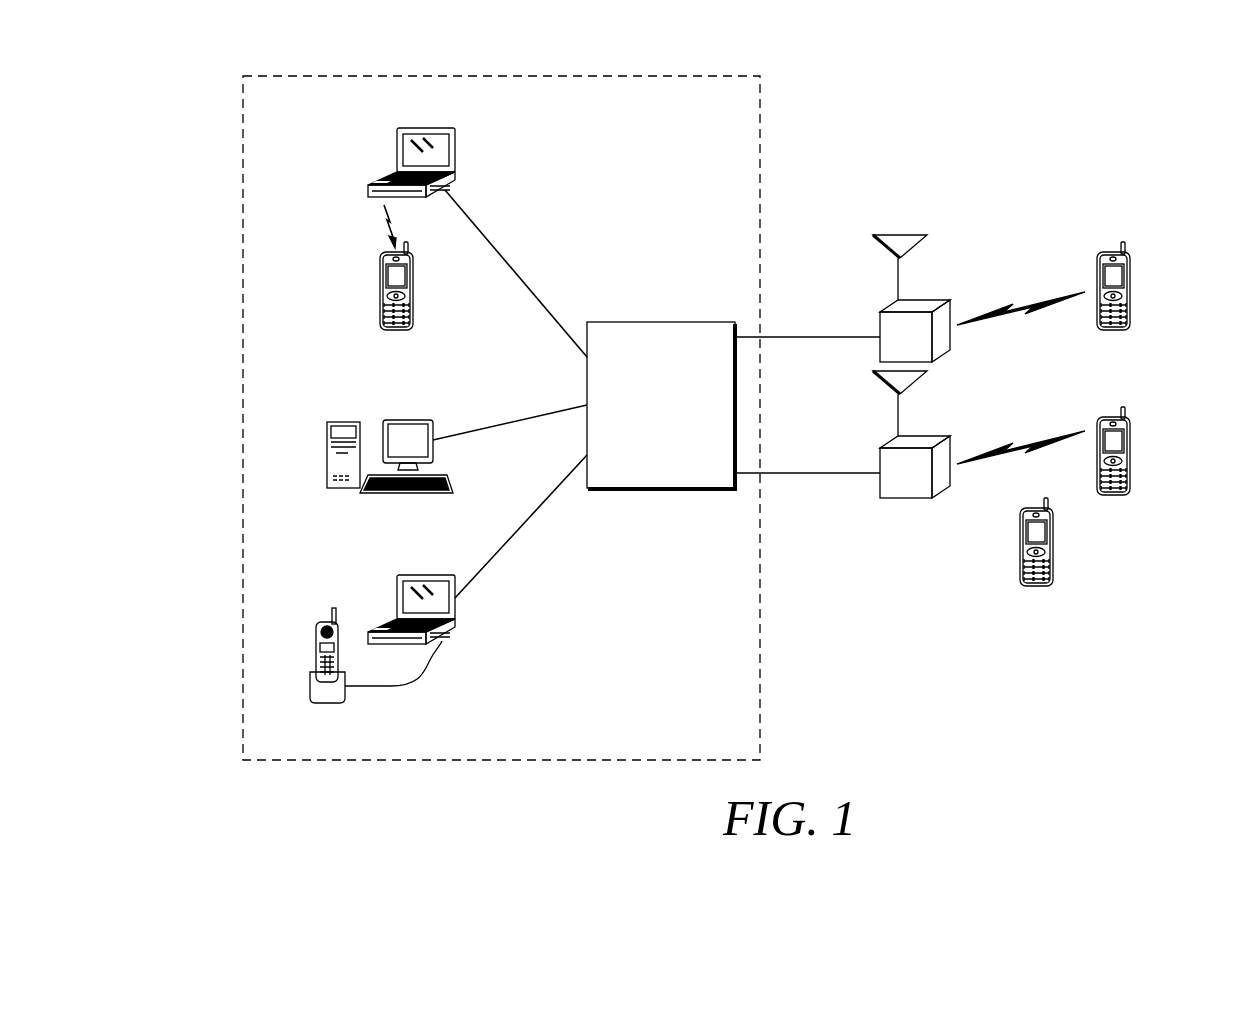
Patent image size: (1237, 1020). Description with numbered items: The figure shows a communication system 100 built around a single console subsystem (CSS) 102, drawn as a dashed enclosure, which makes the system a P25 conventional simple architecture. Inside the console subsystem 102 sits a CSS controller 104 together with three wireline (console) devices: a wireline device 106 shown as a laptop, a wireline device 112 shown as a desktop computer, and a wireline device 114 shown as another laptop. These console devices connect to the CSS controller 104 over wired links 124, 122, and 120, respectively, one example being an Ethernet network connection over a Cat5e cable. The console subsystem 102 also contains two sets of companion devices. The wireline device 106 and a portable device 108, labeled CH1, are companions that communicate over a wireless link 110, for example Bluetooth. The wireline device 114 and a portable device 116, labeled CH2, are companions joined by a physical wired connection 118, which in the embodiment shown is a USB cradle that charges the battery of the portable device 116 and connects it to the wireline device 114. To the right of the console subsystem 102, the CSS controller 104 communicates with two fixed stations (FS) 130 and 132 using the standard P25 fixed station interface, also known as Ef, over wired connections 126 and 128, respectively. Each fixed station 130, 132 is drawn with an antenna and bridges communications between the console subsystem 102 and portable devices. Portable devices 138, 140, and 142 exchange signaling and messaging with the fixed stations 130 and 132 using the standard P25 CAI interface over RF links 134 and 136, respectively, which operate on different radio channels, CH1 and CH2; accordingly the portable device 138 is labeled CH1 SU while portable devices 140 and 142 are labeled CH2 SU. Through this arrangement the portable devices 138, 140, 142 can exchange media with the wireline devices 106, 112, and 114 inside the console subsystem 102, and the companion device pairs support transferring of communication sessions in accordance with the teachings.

The communication system 100 is at (1120, 150).
The console subsystem 102 is at (746, 76).
The CSS controller 104 is at (700, 322).
The wireline device 106 is at (441, 130).
The portable device 108 is at (380, 294).
The wireless link 110 is at (388, 232).
The wireline device 112 is at (387, 420).
The wireline device 114 is at (408, 575).
The portable device 116 is at (330, 618).
The wired connection 118 is at (330, 703).
The wired link 120 is at (521, 528).
The wired link 122 is at (498, 431).
The wired link 124 is at (494, 221).
The wired connection 126 is at (800, 338).
The wired connection 128 is at (800, 474).
The fixed station 130 is at (934, 300).
The fixed station 132 is at (934, 437).
The RF link 134 is at (1039, 301).
The RF link 136 is at (1049, 438).
The portable device 138 is at (1130, 293).
The portable device 140 is at (1020, 551).
The portable device 142 is at (1130, 463).